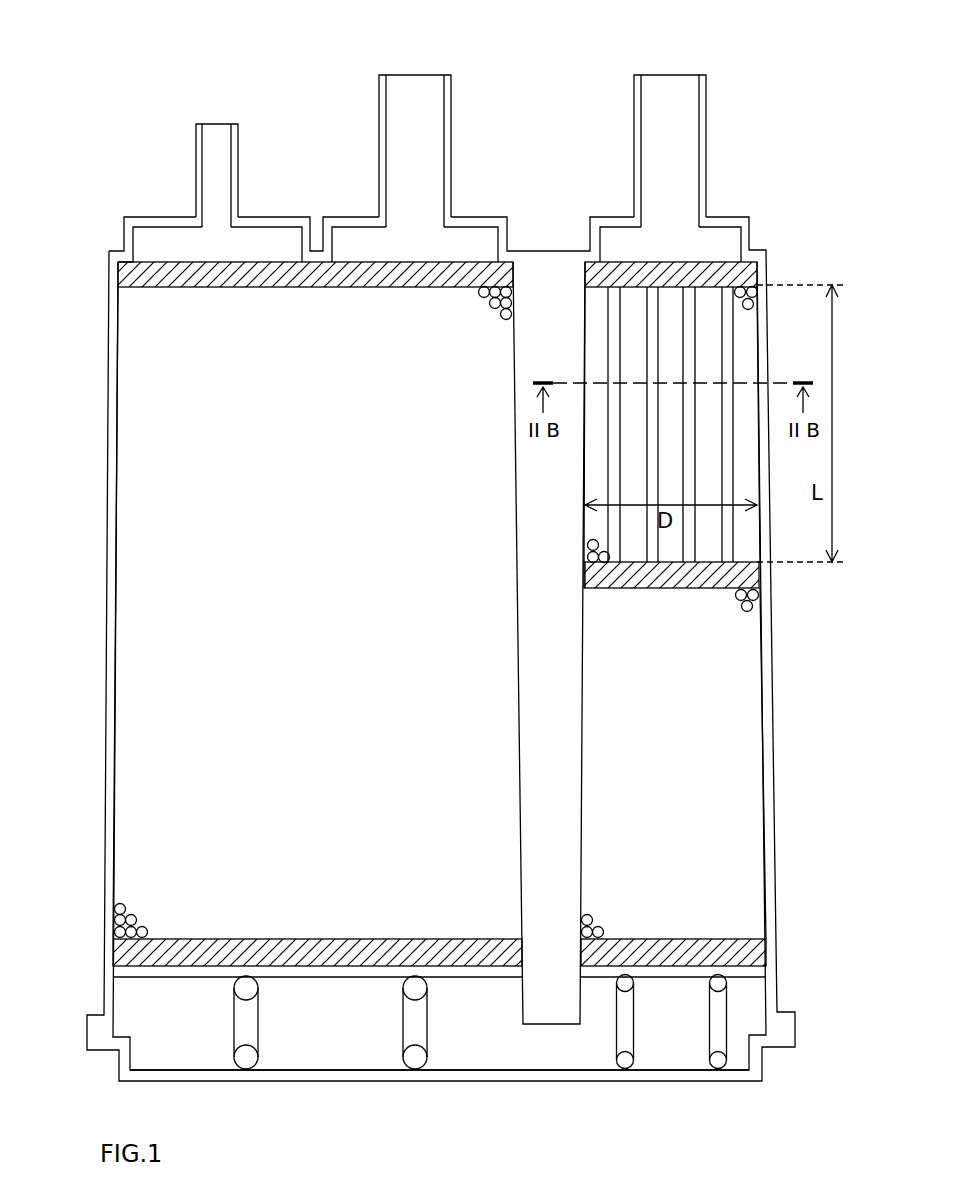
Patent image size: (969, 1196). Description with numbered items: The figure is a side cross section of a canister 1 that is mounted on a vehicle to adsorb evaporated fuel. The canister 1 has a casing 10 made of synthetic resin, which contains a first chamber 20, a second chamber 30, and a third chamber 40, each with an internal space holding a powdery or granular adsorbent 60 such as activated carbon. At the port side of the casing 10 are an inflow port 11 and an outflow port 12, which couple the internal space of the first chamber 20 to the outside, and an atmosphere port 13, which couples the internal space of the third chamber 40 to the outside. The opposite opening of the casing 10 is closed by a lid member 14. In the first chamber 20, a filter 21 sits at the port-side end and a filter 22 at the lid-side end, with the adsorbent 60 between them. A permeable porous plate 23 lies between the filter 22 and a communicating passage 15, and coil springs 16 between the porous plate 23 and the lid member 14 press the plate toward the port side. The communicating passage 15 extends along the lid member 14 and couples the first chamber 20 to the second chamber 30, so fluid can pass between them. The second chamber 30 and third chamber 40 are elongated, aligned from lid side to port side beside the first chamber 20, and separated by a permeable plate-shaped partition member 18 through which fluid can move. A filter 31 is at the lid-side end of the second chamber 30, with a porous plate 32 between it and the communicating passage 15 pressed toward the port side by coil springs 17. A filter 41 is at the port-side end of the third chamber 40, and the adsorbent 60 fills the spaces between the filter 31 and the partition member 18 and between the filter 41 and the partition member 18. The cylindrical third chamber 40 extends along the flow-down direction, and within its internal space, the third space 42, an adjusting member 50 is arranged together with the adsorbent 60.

The canister 1 is at (746, 52).
The casing 10 is at (157, 131).
The inflow port 11 is at (238, 164).
The outflow port 12 is at (451, 112).
The atmosphere port 13 is at (706, 122).
The lid member 14 is at (488, 1073).
The communicating passage 15 is at (545, 1052).
The coil springs 16 is at (403, 1063).
The coil springs 17 is at (720, 1062).
The partition member 18 is at (590, 574).
The first chamber 20 is at (114, 443).
The filter 21 is at (137, 284).
The filter 22 is at (126, 957).
The porous plate 23 is at (140, 973).
The second chamber 30 is at (766, 677).
The filter 31 is at (745, 950).
The porous plate 32 is at (738, 968).
The third chamber 40 is at (764, 314).
The filter 41 is at (702, 270).
The third space 42 is at (740, 529).
The adjusting member 50 is at (744, 359).
The adsorbent 60 is at (602, 328).